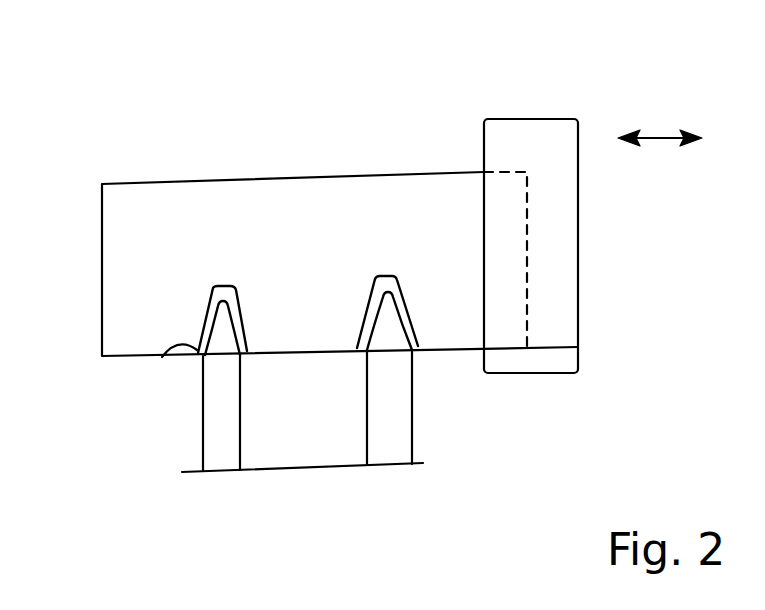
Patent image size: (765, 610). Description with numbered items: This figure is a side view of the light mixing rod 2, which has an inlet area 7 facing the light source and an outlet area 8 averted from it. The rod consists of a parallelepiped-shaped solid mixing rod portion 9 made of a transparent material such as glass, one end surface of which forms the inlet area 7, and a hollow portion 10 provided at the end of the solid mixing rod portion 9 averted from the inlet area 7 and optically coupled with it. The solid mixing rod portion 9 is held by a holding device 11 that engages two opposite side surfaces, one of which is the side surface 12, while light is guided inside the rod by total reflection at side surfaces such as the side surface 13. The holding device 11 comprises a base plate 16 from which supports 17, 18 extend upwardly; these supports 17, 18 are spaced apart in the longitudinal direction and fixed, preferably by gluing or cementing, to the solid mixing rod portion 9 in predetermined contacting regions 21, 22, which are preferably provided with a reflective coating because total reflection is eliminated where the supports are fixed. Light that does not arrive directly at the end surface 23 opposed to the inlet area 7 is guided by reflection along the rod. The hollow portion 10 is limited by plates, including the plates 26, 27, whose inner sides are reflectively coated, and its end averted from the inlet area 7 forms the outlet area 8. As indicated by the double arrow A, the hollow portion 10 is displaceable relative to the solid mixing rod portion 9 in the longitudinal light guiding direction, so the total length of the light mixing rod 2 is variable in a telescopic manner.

The light mixing rod 2 is at (348, 167).
The inlet area 7 is at (101, 329).
The outlet area 8 is at (578, 290).
The solid mixing rod portion 9 is at (140, 182).
The hollow portion 10 is at (500, 118).
The holding device 11 is at (332, 467).
The side surface 12 is at (193, 188).
The side surface 13 is at (250, 182).
The base plate 16 is at (184, 472).
The support 17 is at (241, 448).
The support 18 is at (366, 440).
The contacting region 21 is at (203, 356).
The contacting region 22 is at (415, 344).
The end surface 23 is at (527, 268).
The plate 26 is at (512, 373).
The plate 27 is at (568, 118).
The double arrow A is at (660, 116).